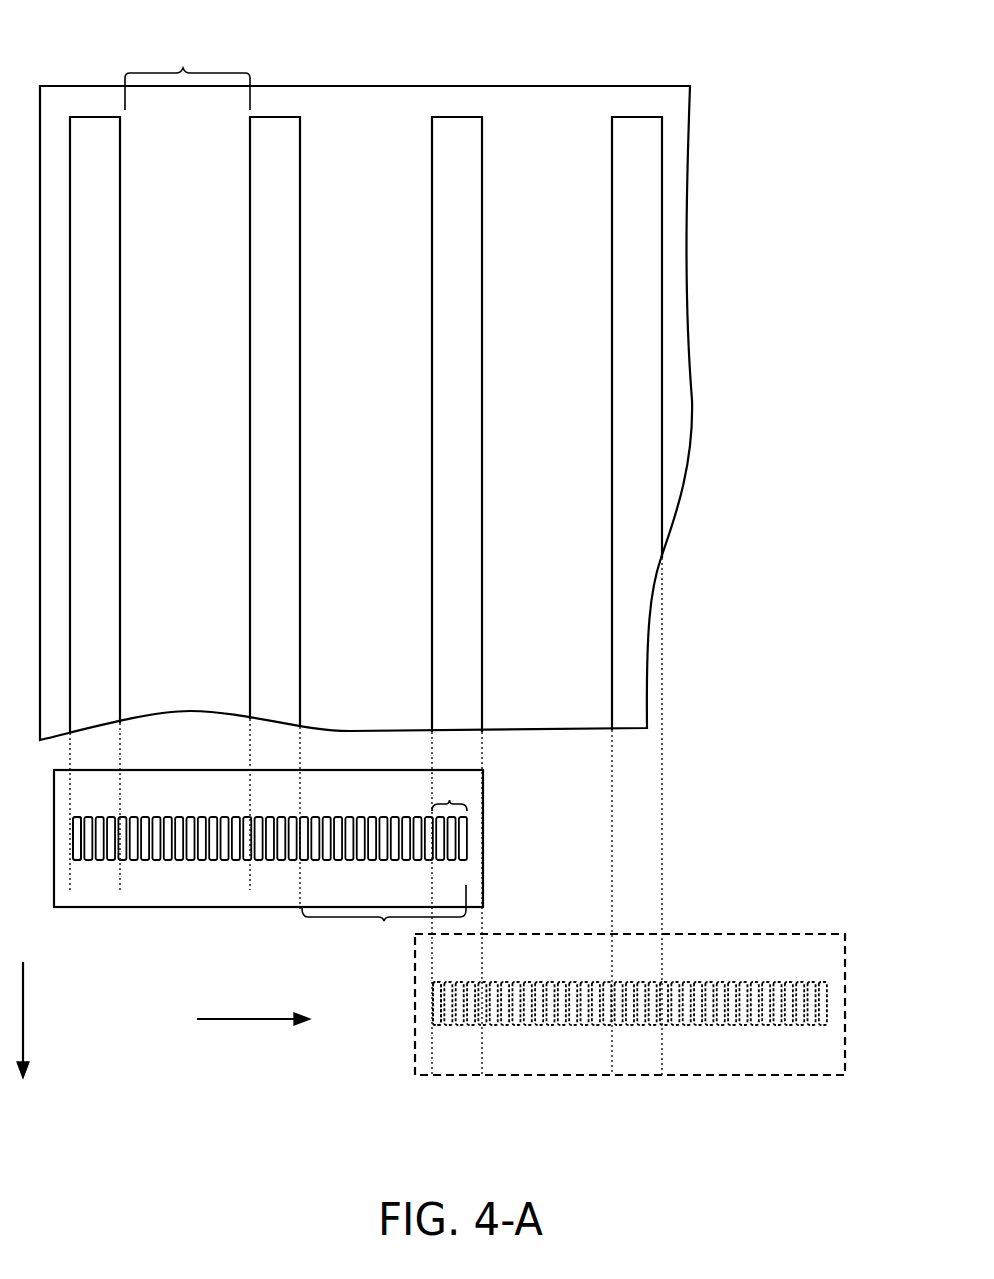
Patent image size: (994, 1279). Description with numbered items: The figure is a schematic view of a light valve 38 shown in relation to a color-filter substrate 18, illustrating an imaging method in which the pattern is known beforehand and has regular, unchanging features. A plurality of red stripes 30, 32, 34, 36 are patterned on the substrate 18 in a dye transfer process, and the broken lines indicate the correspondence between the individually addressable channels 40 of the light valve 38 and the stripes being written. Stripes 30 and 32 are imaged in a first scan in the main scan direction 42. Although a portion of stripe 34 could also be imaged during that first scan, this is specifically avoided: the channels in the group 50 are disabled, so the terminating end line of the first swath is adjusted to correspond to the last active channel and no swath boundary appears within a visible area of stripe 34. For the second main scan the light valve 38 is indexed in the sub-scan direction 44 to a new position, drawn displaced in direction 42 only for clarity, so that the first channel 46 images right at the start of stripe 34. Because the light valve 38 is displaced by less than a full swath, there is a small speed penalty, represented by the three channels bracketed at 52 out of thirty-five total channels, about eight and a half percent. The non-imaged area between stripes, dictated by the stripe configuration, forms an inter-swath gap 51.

The color-filter substrate 18 is at (552, 105).
The red stripe 30 is at (92, 117).
The red stripe 32 is at (276, 117).
The red stripe 34 is at (452, 117).
The red stripe 36 is at (638, 117).
The inter-swath gap 51 is at (187, 61).
The light valve 38 is at (492, 843).
The individually addressable channels 40 is at (199, 862).
The first channel 46 is at (78, 862).
The bracketed channels 52 is at (450, 791).
The disabled channel group 50 is at (384, 915).
The main scan direction 42 is at (23, 1010).
The sub-scan direction 44 is at (238, 1018).